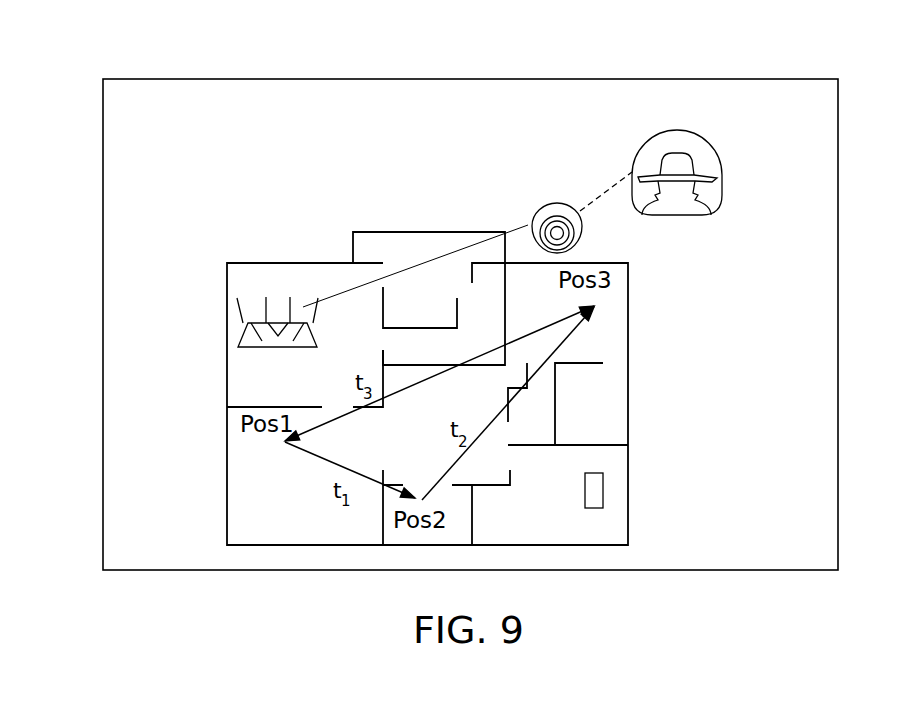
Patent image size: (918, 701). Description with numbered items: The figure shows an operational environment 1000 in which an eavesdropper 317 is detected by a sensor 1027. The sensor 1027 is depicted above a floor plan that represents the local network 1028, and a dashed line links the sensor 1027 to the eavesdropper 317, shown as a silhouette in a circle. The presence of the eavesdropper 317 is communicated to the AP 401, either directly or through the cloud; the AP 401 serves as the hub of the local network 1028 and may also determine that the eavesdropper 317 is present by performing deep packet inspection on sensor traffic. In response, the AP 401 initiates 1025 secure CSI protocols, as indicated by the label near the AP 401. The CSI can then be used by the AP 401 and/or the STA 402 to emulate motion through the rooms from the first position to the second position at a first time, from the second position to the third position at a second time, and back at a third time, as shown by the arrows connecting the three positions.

The operational environment 1000 is at (131, 39).
The local network 1028 is at (210, 129).
The initiate CSI protocols 1025 is at (262, 233).
The AP 401 is at (242, 335).
The sensor 1027 is at (582, 232).
The eavesdropper 317 is at (720, 195).
The STA 402 is at (604, 488).